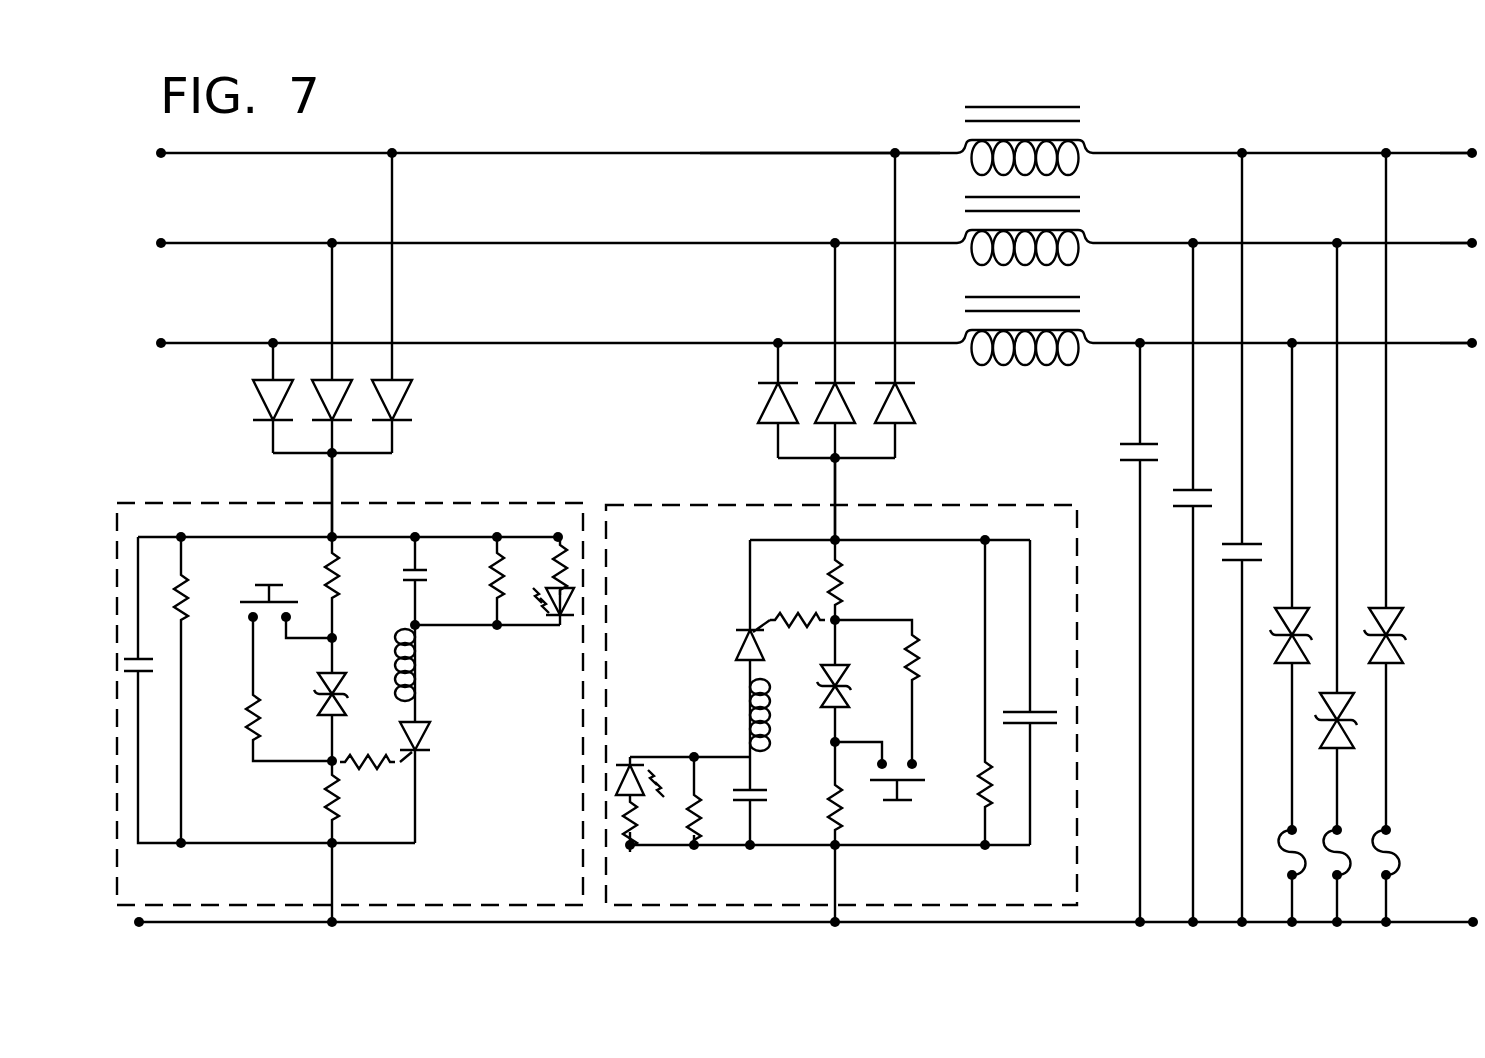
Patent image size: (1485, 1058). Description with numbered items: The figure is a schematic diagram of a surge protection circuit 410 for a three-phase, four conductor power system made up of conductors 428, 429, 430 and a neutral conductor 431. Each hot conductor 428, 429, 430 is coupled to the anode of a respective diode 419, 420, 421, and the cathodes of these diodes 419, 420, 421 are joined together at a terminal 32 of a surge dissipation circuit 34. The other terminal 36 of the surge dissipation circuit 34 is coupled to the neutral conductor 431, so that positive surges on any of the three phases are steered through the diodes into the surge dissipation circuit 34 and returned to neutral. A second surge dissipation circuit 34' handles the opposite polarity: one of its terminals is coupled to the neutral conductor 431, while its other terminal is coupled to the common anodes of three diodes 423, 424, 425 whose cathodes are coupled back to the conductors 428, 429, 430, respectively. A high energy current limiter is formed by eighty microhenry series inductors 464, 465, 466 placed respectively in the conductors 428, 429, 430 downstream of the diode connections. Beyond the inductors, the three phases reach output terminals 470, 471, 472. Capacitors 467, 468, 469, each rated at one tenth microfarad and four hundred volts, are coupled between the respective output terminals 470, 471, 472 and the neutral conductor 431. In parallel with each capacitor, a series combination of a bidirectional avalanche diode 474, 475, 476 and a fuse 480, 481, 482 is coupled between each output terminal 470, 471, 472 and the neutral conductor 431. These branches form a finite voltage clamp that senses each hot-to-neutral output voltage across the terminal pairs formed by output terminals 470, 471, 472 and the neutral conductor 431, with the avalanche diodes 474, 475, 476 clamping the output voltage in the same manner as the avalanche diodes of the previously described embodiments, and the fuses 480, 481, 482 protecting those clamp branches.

The surge protection circuit 410 is at (783, 146).
The conductor 428 is at (458, 152).
The conductor 429 is at (272, 243).
The conductor 430 is at (255, 343).
The diode 419 is at (410, 392).
The diode 420 is at (320, 392).
The diode 421 is at (262, 395).
The diode 423 is at (915, 415).
The diode 424 is at (842, 425).
The diode 425 is at (762, 408).
The terminal 32 is at (340, 456).
The surge dissipation circuit 34 is at (350, 686).
The second surge dissipation circuit 34' is at (841, 675).
The terminal 36 is at (347, 905).
The neutral conductor 431 is at (530, 921).
The series inductor 464 is at (1082, 140).
The series inductor 465 is at (1083, 230).
The series inductor 466 is at (1083, 330).
The capacitor 467 is at (1222, 552).
The capacitor 468 is at (1172, 500).
The capacitor 469 is at (1117, 452).
The output terminal 470 is at (1471, 160).
The output terminal 471 is at (1472, 250).
The output terminal 472 is at (1470, 350).
The bidirectional avalanche diode 474 is at (1398, 622).
The bidirectional avalanche diode 475 is at (1352, 742).
The bidirectional avalanche diode 476 is at (1305, 621).
The fuse 480 is at (1392, 850).
The fuse 481 is at (1345, 855).
The fuse 482 is at (1298, 850).